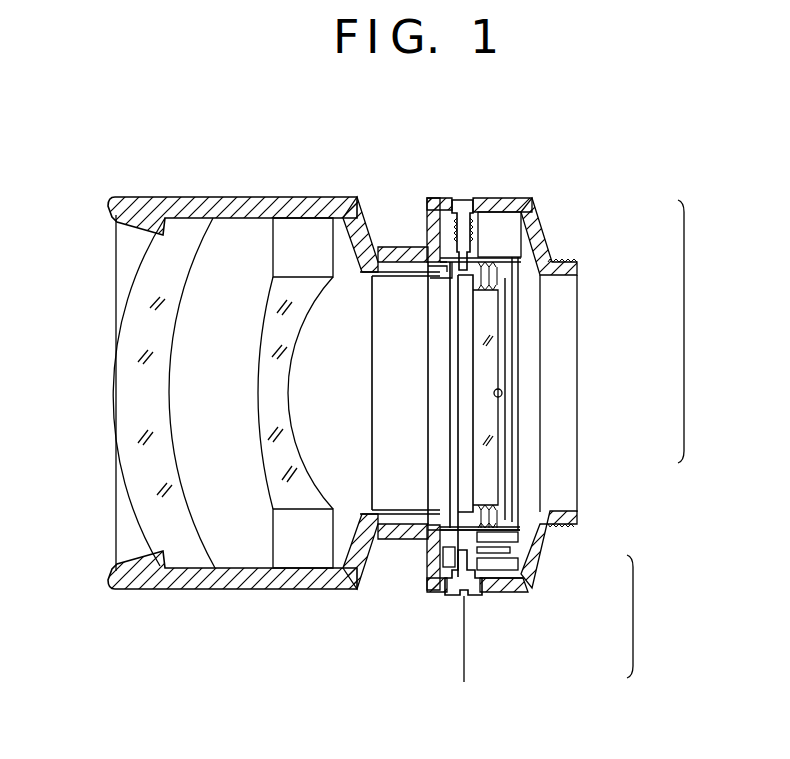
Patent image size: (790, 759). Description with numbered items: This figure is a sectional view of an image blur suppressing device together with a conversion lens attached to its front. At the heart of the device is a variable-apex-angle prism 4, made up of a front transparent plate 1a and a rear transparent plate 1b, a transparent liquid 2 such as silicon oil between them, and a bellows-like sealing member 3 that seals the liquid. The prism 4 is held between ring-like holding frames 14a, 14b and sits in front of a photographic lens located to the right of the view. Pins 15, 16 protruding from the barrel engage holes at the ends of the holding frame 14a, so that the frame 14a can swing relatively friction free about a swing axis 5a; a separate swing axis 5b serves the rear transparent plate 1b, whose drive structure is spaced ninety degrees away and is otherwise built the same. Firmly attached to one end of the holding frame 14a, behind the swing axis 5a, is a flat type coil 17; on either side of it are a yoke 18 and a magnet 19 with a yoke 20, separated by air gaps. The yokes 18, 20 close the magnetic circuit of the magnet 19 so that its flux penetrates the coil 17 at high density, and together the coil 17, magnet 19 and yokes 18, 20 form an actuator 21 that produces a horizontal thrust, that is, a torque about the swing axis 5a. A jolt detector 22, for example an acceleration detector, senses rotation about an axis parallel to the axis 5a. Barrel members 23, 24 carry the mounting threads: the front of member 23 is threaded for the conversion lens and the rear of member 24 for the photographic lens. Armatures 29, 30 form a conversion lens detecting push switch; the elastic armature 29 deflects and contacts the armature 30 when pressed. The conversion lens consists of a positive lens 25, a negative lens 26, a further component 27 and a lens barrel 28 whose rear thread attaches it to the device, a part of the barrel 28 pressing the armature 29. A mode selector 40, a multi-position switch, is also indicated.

The front transparent plate 1a is at (463, 472).
The rear transparent plate 1b is at (513, 483).
The transparent liquid 2 is at (485, 320).
The bellows-like sealing member 3 is at (503, 226).
The variable-apex-angle prism 4 is at (694, 331).
The swing axis 5a is at (464, 663).
The swing axis 5b is at (502, 390).
The holding frame 14a is at (427, 570).
The holding frame 14b is at (513, 518).
The pin 15 is at (473, 593).
The pin 16 is at (455, 200).
The flat type coil 17 is at (513, 550).
The yoke 18 is at (520, 538).
The magnet 19 is at (513, 563).
The yoke 20 is at (518, 590).
The actuator 21 is at (648, 616).
The jolt detector 22 is at (513, 200).
The barrel member 23 is at (433, 592).
The barrel member 24 is at (565, 518).
The lens 25 is at (142, 467).
The lens 26 is at (272, 460).
The conversion lens component 27 is at (213, 198).
The lens barrel 28 is at (342, 590).
The armature 29 is at (433, 282).
The armature 30 is at (443, 268).
The mode selector 40 is at (488, 198).